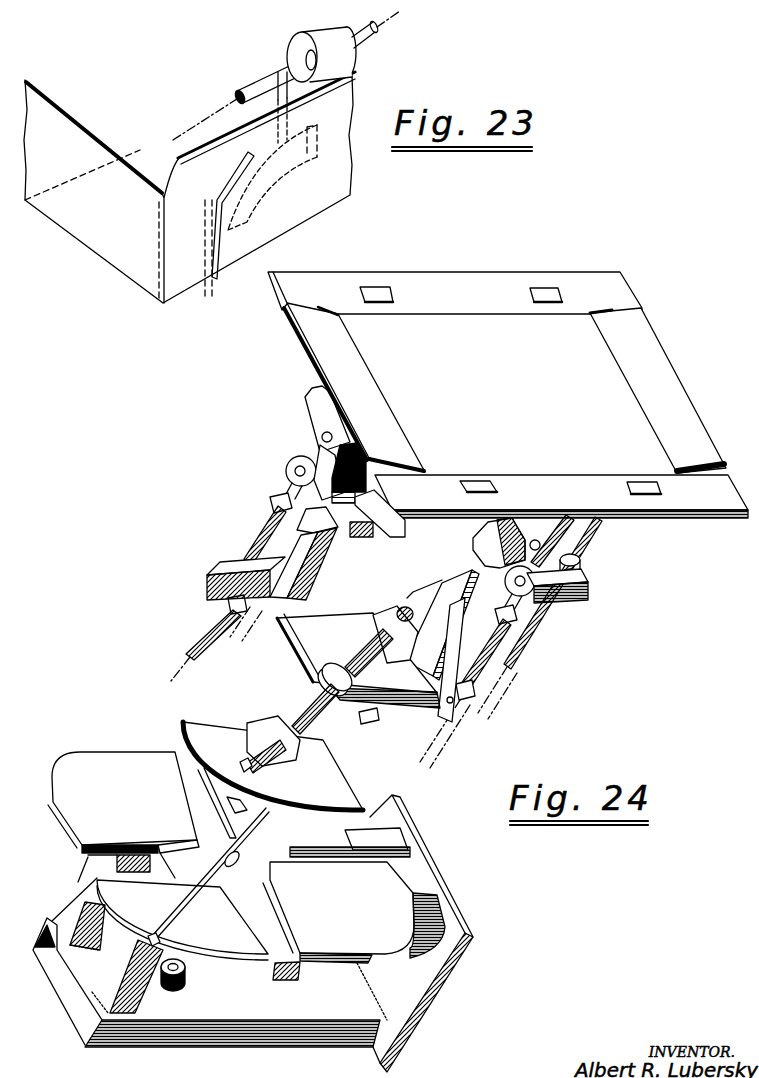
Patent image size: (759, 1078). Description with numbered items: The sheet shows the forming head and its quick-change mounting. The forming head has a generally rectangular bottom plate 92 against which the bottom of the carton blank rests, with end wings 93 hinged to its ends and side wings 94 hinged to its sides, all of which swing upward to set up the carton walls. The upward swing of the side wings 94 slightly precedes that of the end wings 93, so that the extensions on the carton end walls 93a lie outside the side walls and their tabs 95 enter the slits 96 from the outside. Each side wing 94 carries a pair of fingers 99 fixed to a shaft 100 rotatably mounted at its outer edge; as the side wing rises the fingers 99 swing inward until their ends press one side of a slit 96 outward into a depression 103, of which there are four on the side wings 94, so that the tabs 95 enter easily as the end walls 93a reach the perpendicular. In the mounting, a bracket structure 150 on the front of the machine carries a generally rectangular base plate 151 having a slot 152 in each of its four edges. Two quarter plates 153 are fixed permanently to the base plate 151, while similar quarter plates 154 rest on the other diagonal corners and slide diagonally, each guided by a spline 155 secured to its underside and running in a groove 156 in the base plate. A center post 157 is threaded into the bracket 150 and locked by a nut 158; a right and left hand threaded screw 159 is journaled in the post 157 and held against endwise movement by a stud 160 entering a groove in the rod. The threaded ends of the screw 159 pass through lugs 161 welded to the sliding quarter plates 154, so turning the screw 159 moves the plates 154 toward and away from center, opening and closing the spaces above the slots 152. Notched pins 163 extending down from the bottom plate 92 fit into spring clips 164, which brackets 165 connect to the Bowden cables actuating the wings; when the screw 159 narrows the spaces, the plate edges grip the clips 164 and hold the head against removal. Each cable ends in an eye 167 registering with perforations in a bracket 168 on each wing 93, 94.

In FIG. 23, the end wall 93a is at (103, 226).
In FIG. 23, the tab 95 is at (185, 134).
In FIG. 23, the slit 96 is at (216, 265).
In FIG. 23, the finger 99 is at (277, 177).
In FIG. 23, the shaft 100 is at (270, 78).
In FIG. 24, the bottom plate 92 is at (505, 392).
In FIG. 24, the end wing 93 is at (311, 355).
In FIG. 24, the side wing 94 is at (612, 295).
In FIG. 24, the depression 103 is at (560, 290).
In FIG. 24, the bracket structure 150 is at (227, 1040).
In FIG. 24, the base plate 151 is at (139, 900).
In FIG. 24, the slot 152 is at (92, 855).
In FIG. 24, the quarter plate 153 is at (114, 806).
In FIG. 24, the quarter plate 154 is at (243, 722).
In FIG. 24, the spline 155 is at (228, 802).
In FIG. 24, the groove 156 is at (187, 911).
In FIG. 24, the center post 157 is at (335, 715).
In FIG. 24, the nut 158 is at (177, 987).
In FIG. 24, the right and left hand threaded screw 159 is at (352, 653).
In FIG. 24, the stud 160 is at (377, 717).
In FIG. 24, the lug 161 is at (387, 617).
In FIG. 24, the notched pin 163 is at (491, 530).
In FIG. 24, the spring clip 164 is at (318, 570).
In FIG. 24, the bracket 165 is at (228, 563).
In FIG. 24, the eye 167 is at (292, 457).
In FIG. 24, the bracket 168 is at (315, 406).